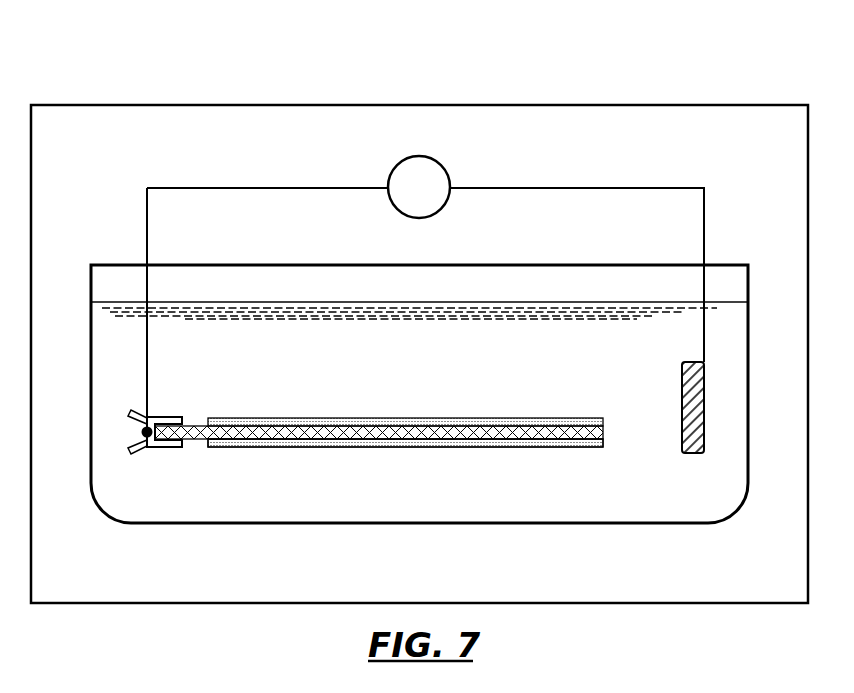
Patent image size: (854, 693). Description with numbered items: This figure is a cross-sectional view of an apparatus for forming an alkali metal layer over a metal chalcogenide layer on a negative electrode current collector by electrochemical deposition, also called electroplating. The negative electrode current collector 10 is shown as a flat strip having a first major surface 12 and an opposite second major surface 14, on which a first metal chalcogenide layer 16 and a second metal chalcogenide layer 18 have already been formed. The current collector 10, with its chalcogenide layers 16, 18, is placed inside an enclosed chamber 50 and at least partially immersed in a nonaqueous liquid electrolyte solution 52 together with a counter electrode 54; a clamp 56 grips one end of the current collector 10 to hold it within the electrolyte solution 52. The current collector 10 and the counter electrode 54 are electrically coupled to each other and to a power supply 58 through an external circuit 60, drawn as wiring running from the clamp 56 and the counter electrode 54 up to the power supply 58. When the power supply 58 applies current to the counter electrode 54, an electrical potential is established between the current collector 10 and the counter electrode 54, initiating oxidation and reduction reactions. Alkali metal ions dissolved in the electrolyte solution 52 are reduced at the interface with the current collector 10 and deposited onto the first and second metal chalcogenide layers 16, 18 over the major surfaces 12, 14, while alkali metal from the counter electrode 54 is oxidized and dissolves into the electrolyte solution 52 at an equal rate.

The negative electrode current collector 10 is at (396, 434).
The first major surface 12 is at (445, 427).
The second major surface 14 is at (460, 440).
The first metal chalcogenide layer 16 is at (208, 420).
The second metal chalcogenide layer 18 is at (208, 447).
The enclosed chamber 50 is at (518, 104).
The nonaqueous liquid electrolyte solution 52 is at (360, 382).
The counter electrode 54 is at (680, 443).
The clamp 56 is at (157, 448).
The power supply 58 is at (446, 172).
The external circuit 60 is at (633, 188).